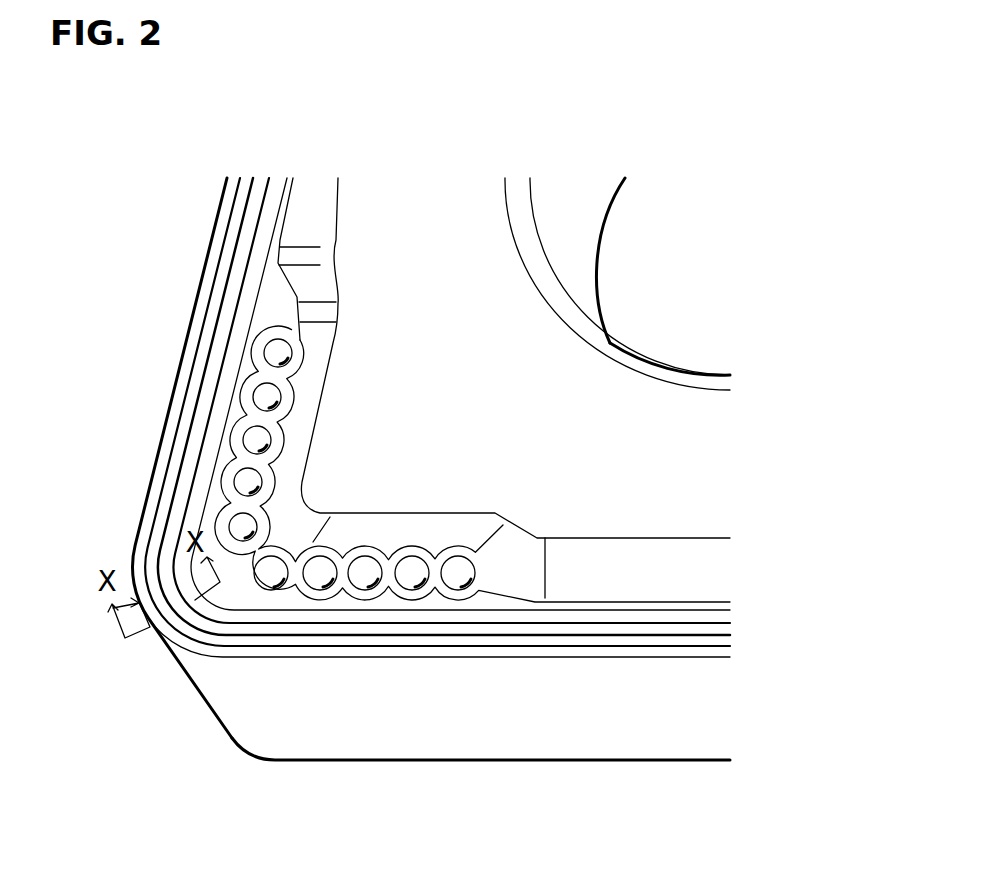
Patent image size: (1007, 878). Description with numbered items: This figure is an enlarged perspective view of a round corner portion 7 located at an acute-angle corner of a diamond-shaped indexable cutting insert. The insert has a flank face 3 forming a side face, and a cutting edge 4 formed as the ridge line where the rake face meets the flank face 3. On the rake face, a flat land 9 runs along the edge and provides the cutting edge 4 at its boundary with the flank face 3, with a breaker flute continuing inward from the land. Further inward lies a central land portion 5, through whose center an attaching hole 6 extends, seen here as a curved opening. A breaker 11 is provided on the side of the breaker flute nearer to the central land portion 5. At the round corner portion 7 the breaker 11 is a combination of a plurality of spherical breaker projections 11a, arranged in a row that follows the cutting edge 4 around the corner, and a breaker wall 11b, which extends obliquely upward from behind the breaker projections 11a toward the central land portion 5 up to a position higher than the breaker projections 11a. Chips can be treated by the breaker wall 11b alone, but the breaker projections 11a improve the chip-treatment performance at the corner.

The flank face 3 is at (558, 718).
The cutting edge 4 is at (177, 657).
The central land portion 5 is at (418, 240).
The attaching hole 6 is at (640, 250).
The round corner portion 7 is at (136, 604).
The flat land 9 is at (430, 650).
The breaker 11 is at (372, 464).
The breaker projection 11a is at (265, 395).
The breaker wall 11b is at (258, 505).